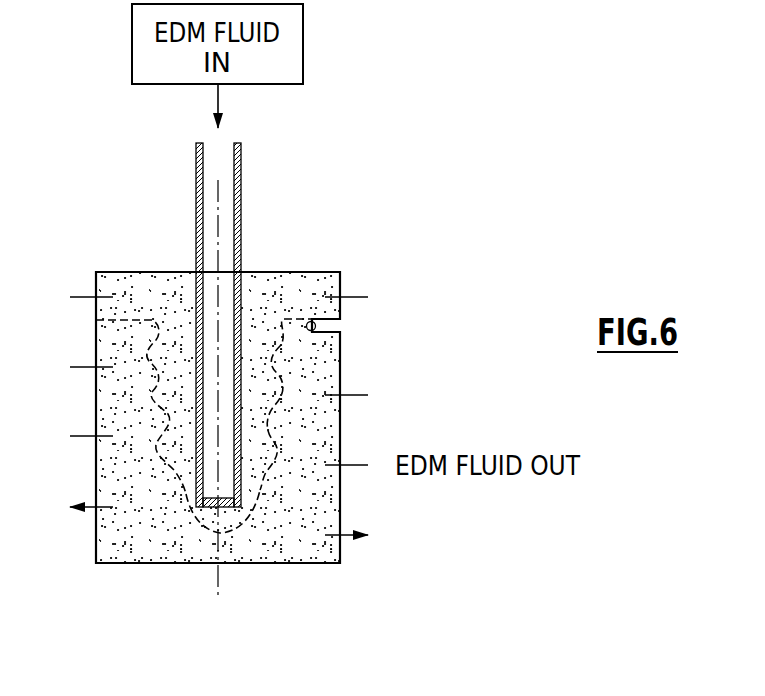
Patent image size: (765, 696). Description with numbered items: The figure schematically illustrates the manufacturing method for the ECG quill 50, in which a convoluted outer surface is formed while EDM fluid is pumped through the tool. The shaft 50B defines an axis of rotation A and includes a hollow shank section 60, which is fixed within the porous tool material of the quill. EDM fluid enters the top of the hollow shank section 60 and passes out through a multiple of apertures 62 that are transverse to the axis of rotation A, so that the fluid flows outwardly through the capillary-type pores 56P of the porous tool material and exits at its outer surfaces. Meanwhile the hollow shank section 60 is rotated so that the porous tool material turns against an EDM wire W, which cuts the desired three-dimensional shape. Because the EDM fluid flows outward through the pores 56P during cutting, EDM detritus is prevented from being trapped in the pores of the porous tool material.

The ECG quill 50 is at (470, 247).
The shaft 50B is at (280, 184).
The pores 56P is at (311, 290).
The hollow shank section 60 is at (241, 248).
The apertures 62 is at (185, 497).
The EDM wire W is at (315, 330).
The axis of rotation A is at (220, 576).